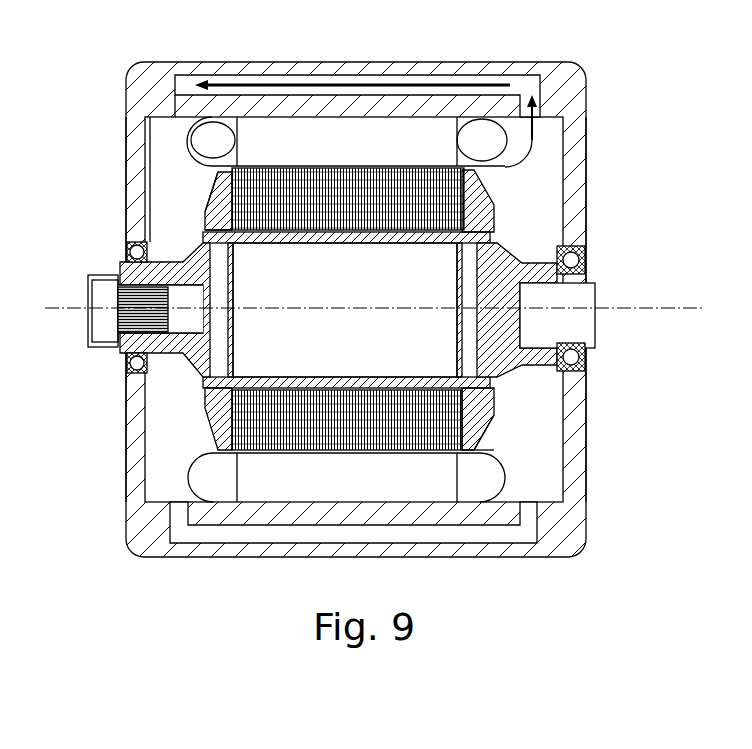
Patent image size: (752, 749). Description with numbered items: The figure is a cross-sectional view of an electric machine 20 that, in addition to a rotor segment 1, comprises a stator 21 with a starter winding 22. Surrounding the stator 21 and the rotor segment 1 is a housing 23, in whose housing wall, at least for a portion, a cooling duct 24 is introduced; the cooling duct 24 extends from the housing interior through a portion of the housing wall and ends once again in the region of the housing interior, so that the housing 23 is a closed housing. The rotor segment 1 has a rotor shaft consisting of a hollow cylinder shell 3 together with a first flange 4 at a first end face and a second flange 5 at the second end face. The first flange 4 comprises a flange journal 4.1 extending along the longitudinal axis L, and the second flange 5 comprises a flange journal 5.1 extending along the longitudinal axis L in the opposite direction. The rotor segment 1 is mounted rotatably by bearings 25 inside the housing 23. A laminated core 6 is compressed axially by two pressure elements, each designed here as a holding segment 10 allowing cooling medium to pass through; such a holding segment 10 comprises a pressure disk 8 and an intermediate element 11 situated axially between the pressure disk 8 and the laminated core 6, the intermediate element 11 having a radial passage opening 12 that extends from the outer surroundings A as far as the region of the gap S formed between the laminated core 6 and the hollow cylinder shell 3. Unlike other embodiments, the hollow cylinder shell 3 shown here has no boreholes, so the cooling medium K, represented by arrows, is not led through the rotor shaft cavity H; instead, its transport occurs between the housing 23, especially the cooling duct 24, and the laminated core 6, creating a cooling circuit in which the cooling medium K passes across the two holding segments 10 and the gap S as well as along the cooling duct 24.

The rotor segment 1 is at (606, 301).
The hollow cylinder shell 3 is at (265, 366).
The first flange 4 is at (185, 240).
The flange journal 4.1 is at (155, 318).
The second flange 5 is at (497, 233).
The flange journal 5.1 is at (541, 367).
The laminated core 6 is at (352, 247).
The pressure disk 8 is at (207, 188).
The holding segment 10 is at (500, 195).
The intermediate element 11 is at (204, 208).
The radial passage opening 12 is at (204, 230).
The electric machine 20 is at (519, 44).
The stator 21 is at (128, 150).
The starter winding 22 is at (126, 142).
The housing 23 is at (586, 197).
The cooling duct 24 is at (183, 100).
The bearings 25 is at (586, 255).
The outer surroundings A is at (619, 105).
The cooling medium K is at (540, 136).
The rotor shaft cavity H is at (322, 346).
The gap S is at (388, 375).
The longitudinal axis L is at (88, 310).